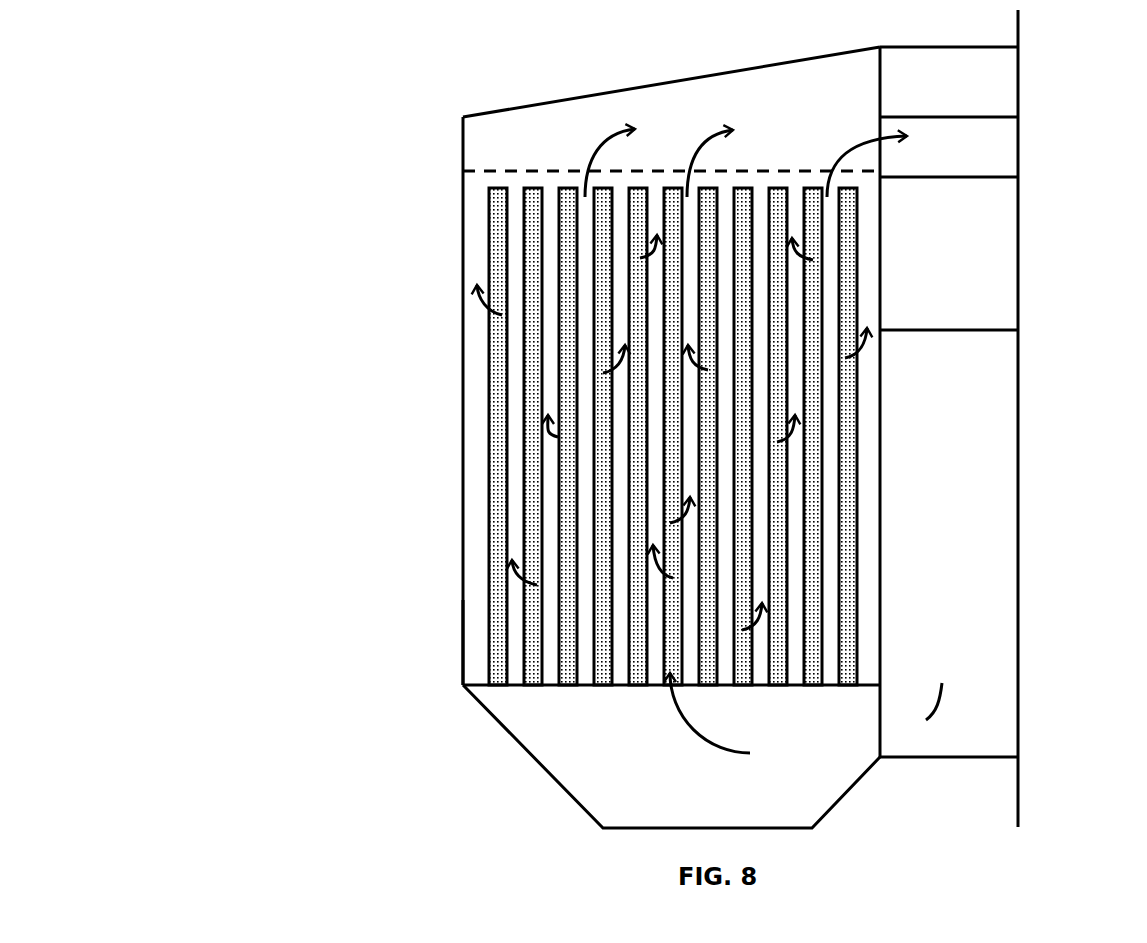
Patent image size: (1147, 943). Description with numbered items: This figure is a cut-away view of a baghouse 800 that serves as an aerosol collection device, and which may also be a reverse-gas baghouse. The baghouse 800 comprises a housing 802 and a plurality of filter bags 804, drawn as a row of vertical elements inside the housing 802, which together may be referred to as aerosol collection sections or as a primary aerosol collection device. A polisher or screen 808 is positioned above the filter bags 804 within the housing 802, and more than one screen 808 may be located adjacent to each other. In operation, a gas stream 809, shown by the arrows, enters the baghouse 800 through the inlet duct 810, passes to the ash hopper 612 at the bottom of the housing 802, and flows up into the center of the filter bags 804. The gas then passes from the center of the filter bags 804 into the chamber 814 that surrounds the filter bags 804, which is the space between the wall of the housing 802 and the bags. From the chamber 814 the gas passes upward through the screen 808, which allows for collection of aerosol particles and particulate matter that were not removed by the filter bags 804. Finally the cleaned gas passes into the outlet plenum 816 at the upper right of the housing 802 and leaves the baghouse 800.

The baghouse 800 is at (358, 343).
The housing 802 is at (545, 103).
The filter bags 804 is at (572, 365).
The screen 808 is at (498, 168).
The gas stream 809 is at (818, 745).
The inlet duct 810 is at (1020, 458).
The chamber 814 is at (477, 560).
The outlet plenum 816 is at (1020, 153).
The hopper 612 is at (512, 740).